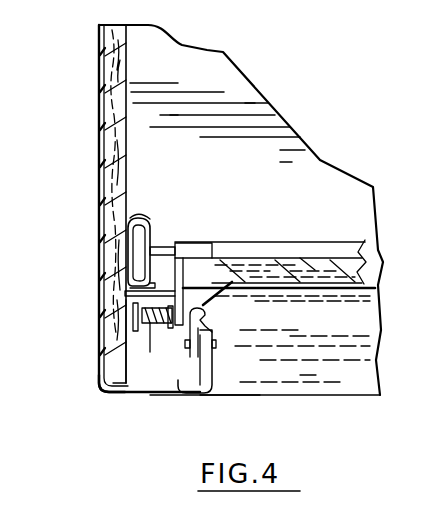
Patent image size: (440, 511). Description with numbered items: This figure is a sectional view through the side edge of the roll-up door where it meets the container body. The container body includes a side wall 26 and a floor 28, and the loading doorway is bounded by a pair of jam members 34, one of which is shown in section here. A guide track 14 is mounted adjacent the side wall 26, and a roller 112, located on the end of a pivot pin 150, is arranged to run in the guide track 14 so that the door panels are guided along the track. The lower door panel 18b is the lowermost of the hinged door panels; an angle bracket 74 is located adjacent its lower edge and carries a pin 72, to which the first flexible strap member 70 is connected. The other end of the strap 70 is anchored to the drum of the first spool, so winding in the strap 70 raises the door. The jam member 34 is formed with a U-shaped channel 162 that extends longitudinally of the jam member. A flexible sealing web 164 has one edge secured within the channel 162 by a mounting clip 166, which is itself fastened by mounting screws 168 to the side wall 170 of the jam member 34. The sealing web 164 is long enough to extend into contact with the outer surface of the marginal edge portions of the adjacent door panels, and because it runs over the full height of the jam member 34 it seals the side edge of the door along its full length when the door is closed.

The guide track 14 is at (134, 218).
The lower door panel 18b is at (322, 262).
The side wall 26 is at (128, 149).
The floor 28 is at (258, 92).
The jam member 34 is at (176, 397).
The first flexible strap member 70 is at (120, 371).
The pin 72 is at (130, 315).
The angle bracket 74 is at (130, 291).
The roller 112 is at (141, 217).
The pivot pin 150 is at (158, 243).
The U-shaped channel 162 is at (102, 383).
The flexible sealing web 164 is at (233, 285).
The mounting clip 166 is at (185, 357).
The mounting screw 168 is at (212, 343).
The side wall of the jam member 170 is at (212, 362).